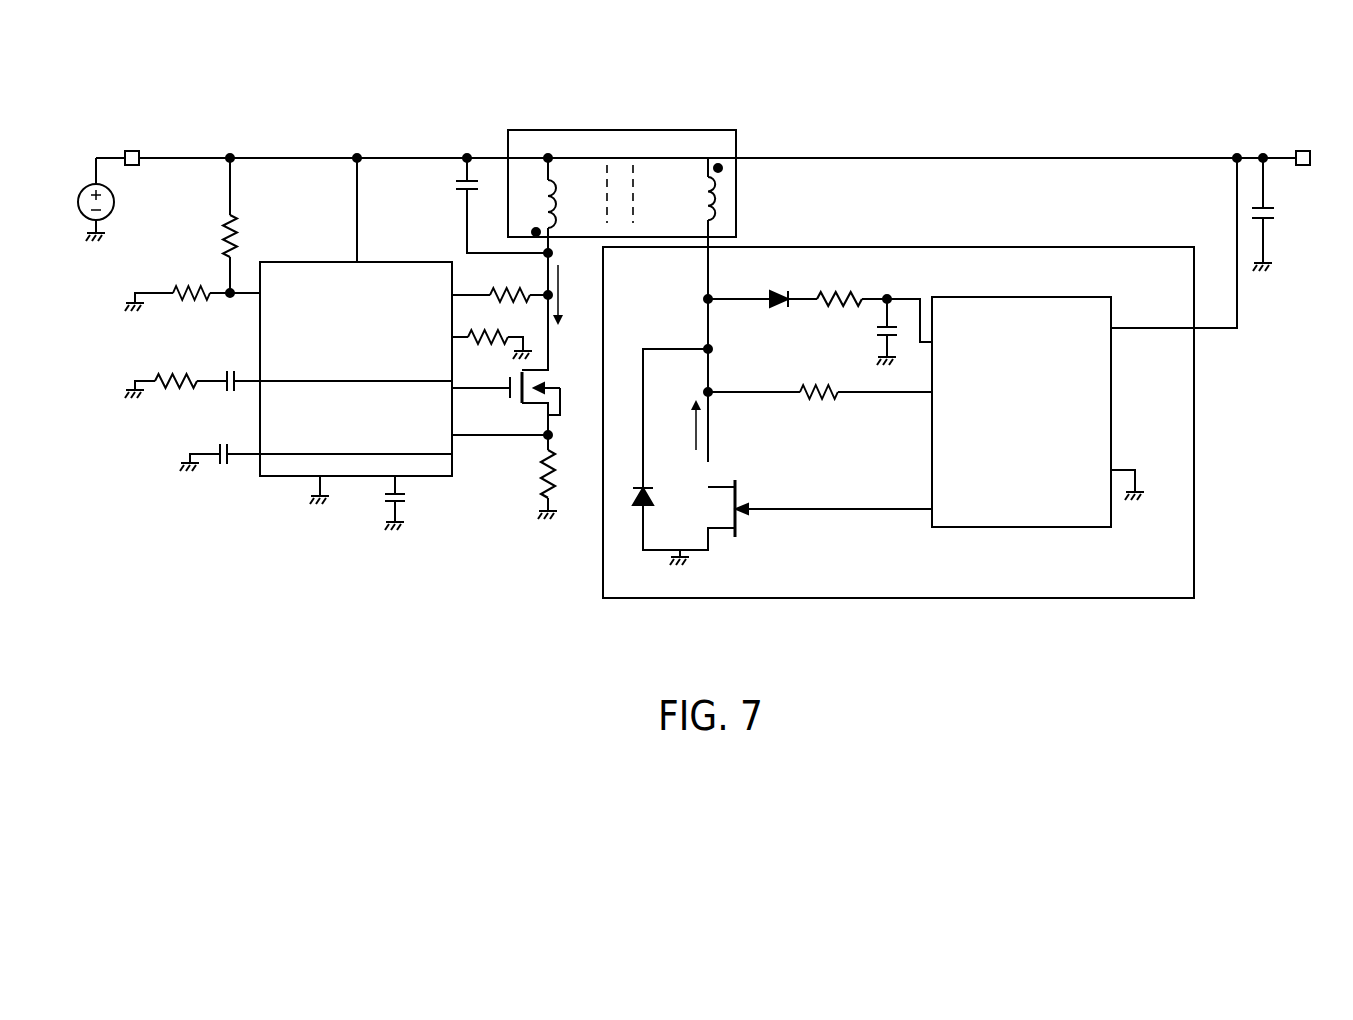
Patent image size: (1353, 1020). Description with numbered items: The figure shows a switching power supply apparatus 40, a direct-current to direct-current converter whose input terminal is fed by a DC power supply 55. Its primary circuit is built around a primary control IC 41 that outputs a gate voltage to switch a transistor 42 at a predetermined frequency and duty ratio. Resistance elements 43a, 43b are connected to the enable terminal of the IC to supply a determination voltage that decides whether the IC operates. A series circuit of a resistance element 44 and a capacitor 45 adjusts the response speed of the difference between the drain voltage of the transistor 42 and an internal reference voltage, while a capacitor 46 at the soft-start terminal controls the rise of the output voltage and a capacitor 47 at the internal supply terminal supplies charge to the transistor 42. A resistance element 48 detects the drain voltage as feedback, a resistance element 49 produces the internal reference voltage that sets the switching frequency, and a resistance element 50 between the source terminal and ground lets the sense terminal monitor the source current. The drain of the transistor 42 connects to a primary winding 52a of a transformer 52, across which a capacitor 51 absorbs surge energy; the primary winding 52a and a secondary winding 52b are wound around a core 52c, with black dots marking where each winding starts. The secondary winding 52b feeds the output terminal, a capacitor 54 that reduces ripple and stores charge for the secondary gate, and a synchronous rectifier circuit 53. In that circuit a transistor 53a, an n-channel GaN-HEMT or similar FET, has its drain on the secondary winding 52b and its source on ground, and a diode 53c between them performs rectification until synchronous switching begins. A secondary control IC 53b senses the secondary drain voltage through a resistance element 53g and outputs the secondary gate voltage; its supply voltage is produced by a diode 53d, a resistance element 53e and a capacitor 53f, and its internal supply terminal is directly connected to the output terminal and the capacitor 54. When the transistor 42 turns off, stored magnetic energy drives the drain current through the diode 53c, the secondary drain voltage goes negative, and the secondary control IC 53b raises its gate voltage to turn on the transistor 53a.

The switching power supply apparatus 40 is at (1302, 88).
The primary control IC 41 is at (397, 262).
The transistor 42 is at (527, 406).
The resistance element 43a is at (233, 222).
The resistance element 43b is at (182, 287).
The resistance element 44 is at (159, 372).
The capacitor 45 is at (226, 370).
The capacitor 46 is at (218, 443).
The capacitor 47 is at (400, 494).
The resistance element 48 is at (522, 284).
The resistance element 49 is at (497, 330).
The resistance element 50 is at (539, 483).
The capacitor 51 is at (468, 178).
The transformer 52 is at (623, 195).
The primary winding 52a is at (545, 197).
The secondary winding 52b is at (722, 186).
The core 52c is at (632, 198).
The synchronous rectifier circuit 53 is at (1140, 247).
The transistor 53a is at (740, 494).
The secondary control IC 53b is at (1112, 388).
The diode 53c is at (640, 506).
The diode 53d is at (768, 303).
The resistance element 53e is at (820, 305).
The capacitor 53f is at (870, 332).
The resistance element 53g is at (800, 400).
The capacitor 54 is at (1275, 208).
The DC power supply 55 is at (112, 216).